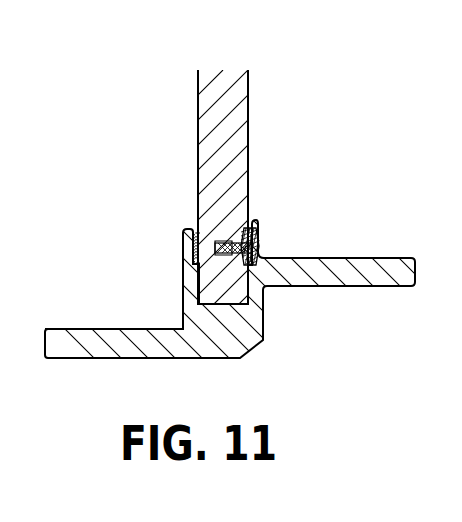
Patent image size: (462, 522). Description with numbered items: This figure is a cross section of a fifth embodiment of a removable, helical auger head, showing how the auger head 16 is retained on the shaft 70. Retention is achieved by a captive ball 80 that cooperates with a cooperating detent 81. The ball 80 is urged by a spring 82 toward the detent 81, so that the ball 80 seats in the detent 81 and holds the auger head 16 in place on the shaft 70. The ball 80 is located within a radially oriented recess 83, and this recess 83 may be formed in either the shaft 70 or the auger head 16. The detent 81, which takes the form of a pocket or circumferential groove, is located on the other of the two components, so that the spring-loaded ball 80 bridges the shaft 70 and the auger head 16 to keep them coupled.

The auger head 16 is at (392, 258).
The shaft 70 is at (212, 150).
The ball 80 is at (258, 240).
The detent 81 is at (261, 247).
The spring 82 is at (228, 243).
The radially oriented recess 83 is at (225, 240).